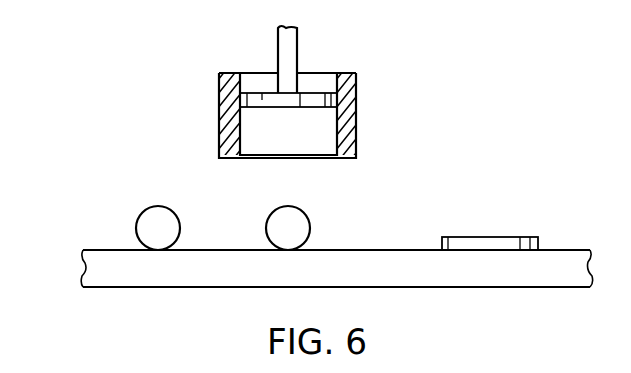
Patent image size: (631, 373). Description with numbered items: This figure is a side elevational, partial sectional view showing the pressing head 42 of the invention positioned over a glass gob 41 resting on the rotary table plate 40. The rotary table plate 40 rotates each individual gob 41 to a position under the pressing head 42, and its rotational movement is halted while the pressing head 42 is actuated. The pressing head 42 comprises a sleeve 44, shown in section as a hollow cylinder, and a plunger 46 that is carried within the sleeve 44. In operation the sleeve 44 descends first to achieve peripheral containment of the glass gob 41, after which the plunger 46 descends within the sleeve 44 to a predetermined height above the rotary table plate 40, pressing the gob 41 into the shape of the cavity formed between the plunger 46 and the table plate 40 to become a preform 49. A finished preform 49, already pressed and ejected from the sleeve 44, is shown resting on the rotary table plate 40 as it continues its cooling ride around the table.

The rotary table plate 40 is at (100, 267).
The glass gob 41 is at (150, 220).
The pressing head 42 is at (330, 114).
The sleeve 44 is at (356, 131).
The plunger 46 is at (265, 107).
The preform 49 is at (530, 237).